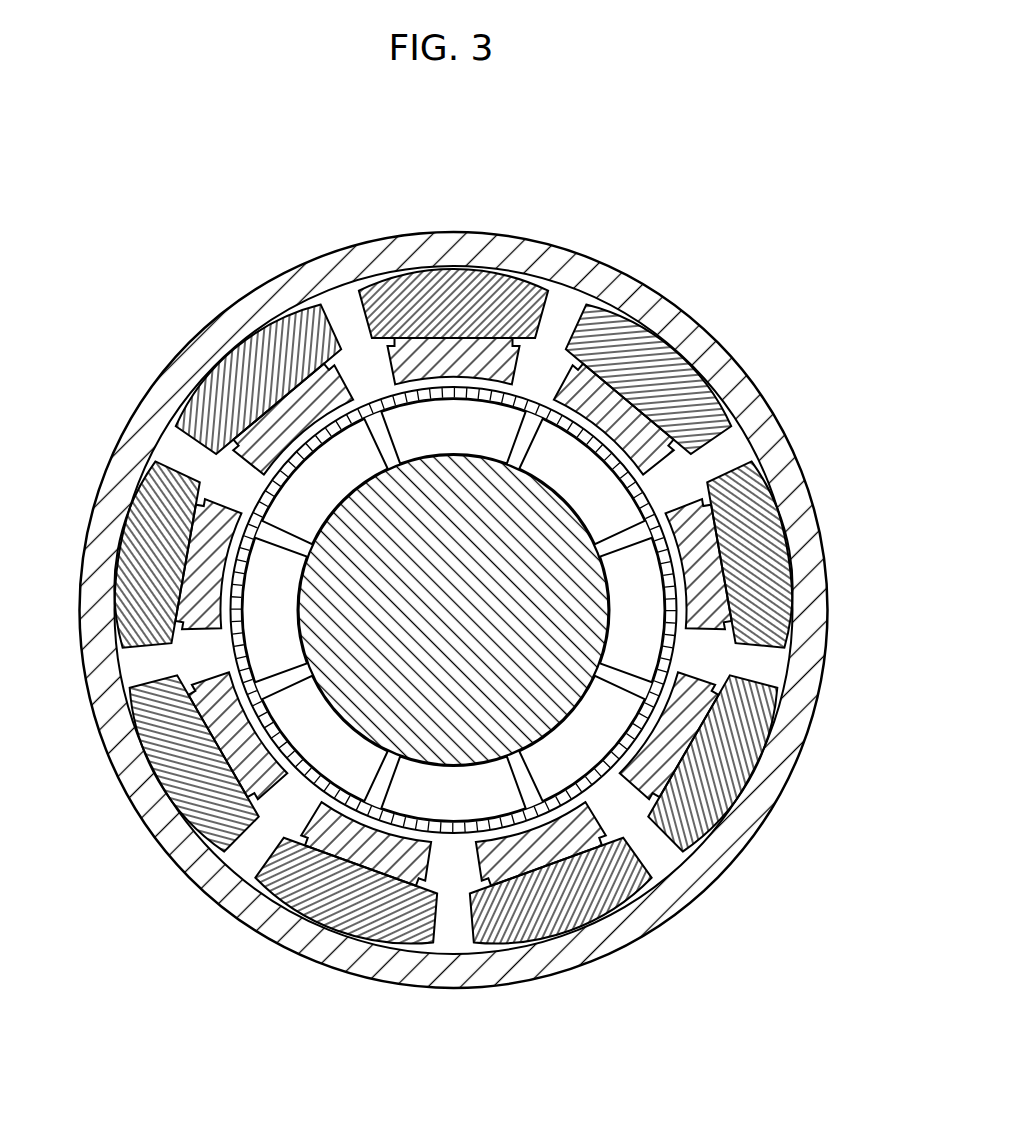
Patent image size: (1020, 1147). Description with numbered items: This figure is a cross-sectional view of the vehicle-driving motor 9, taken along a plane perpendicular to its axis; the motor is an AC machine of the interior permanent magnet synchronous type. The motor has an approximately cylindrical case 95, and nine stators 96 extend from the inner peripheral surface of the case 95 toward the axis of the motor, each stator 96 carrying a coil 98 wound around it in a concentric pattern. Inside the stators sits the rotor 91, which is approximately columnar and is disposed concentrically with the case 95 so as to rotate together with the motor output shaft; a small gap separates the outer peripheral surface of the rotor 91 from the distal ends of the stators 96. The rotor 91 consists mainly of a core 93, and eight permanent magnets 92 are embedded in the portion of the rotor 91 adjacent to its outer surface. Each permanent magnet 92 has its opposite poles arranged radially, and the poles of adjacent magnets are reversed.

The vehicle-driving motor 9 is at (158, 183).
The rotor 91 is at (505, 610).
The permanent magnet 92 is at (420, 450).
The core 93 is at (775, 406).
The case 95 is at (440, 233).
The stator 96 is at (451, 617).
The coil 98 is at (367, 278).